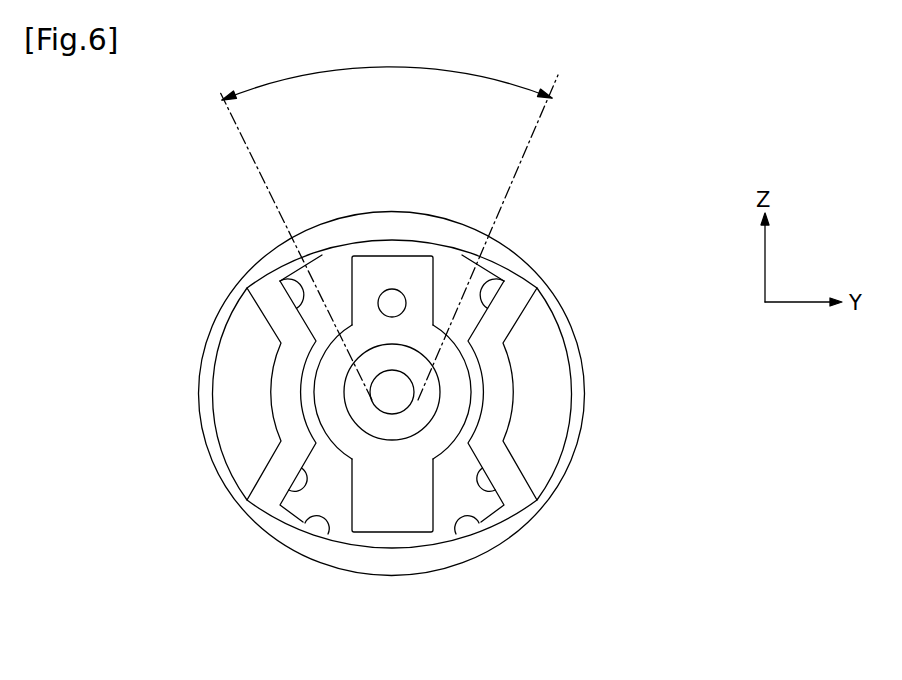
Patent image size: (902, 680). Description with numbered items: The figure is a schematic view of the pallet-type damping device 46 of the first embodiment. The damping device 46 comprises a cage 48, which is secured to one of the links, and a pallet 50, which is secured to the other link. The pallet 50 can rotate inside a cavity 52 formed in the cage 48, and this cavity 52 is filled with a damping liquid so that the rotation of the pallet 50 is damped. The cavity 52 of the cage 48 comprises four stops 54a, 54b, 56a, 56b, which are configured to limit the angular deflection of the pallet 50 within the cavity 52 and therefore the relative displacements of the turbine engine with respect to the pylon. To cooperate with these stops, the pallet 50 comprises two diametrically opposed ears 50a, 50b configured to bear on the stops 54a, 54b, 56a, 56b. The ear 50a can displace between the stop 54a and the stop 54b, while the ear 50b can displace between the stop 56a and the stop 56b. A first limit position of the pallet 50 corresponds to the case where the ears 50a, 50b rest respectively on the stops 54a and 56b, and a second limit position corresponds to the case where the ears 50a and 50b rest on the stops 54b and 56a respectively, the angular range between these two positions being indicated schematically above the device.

The damping device 46 is at (617, 481).
The cage 48 is at (578, 338).
The pallet 50 is at (387, 390).
The ear 50a is at (390, 270).
The ear 50b is at (387, 513).
The cavity 52 is at (330, 532).
The stop 54a is at (280, 282).
The stop 54b is at (504, 282).
The stop 56a is at (292, 487).
The stop 56b is at (478, 468).